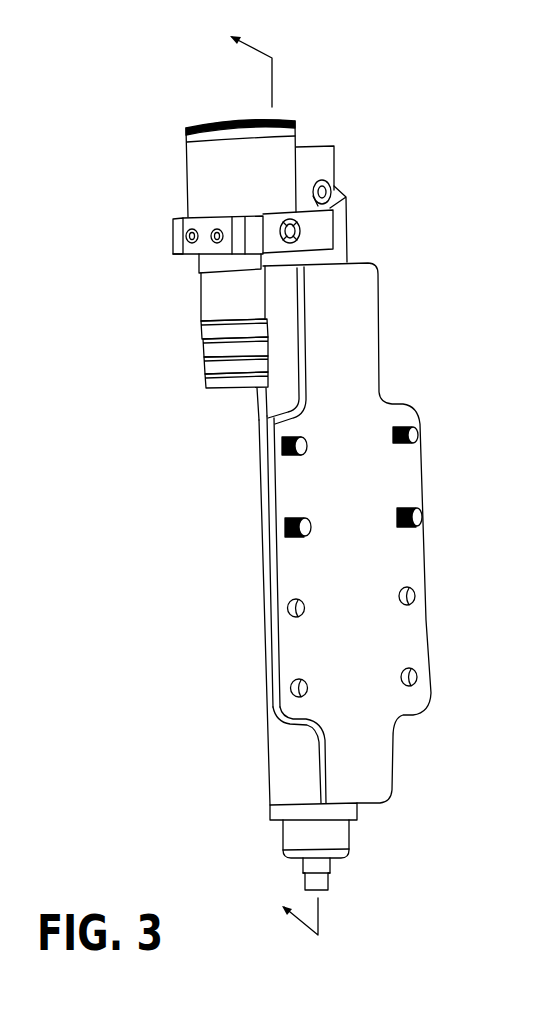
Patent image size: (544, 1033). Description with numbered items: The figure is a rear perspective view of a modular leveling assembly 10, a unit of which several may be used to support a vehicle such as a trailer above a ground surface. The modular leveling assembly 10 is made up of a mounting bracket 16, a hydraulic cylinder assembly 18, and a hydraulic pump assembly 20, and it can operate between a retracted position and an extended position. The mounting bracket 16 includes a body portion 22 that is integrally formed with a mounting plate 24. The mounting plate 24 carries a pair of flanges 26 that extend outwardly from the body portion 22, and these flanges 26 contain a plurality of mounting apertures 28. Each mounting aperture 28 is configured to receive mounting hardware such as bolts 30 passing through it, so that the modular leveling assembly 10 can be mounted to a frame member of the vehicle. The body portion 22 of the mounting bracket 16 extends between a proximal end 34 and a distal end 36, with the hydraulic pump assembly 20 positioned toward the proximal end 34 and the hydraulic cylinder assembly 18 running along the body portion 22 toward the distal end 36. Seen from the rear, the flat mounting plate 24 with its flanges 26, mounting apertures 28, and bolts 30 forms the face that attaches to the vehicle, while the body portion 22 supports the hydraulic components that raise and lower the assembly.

The modular leveling assembly 10 is at (414, 226).
The mounting bracket 16 is at (432, 553).
The hydraulic cylinder assembly 18 is at (258, 622).
The hydraulic pump assembly 20 is at (175, 176).
The body portion 22 is at (253, 407).
The mounting plate 24 is at (422, 460).
The flanges 26 is at (284, 471).
The mounting apertures 28 is at (413, 603).
The bolts 30 is at (418, 432).
The proximal end 34 is at (283, 297).
The distal end 36 is at (270, 747).